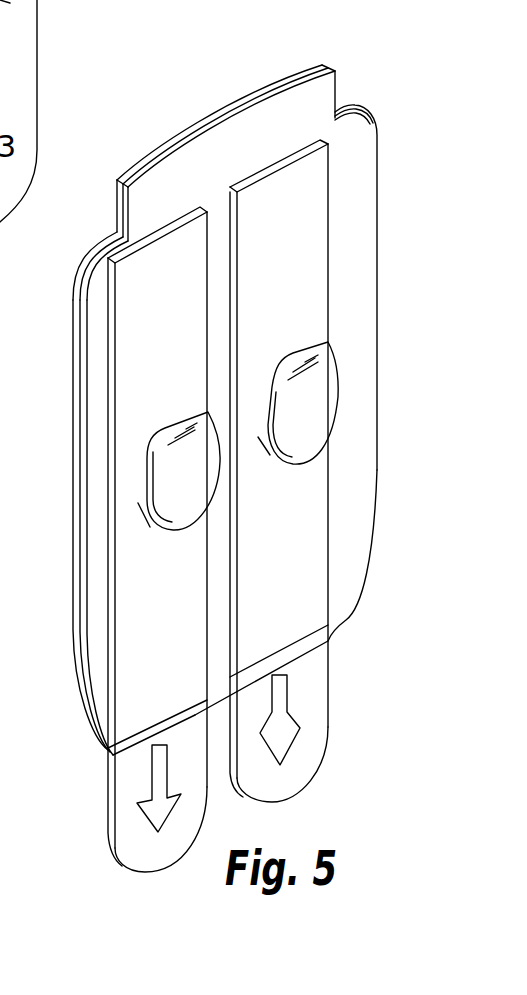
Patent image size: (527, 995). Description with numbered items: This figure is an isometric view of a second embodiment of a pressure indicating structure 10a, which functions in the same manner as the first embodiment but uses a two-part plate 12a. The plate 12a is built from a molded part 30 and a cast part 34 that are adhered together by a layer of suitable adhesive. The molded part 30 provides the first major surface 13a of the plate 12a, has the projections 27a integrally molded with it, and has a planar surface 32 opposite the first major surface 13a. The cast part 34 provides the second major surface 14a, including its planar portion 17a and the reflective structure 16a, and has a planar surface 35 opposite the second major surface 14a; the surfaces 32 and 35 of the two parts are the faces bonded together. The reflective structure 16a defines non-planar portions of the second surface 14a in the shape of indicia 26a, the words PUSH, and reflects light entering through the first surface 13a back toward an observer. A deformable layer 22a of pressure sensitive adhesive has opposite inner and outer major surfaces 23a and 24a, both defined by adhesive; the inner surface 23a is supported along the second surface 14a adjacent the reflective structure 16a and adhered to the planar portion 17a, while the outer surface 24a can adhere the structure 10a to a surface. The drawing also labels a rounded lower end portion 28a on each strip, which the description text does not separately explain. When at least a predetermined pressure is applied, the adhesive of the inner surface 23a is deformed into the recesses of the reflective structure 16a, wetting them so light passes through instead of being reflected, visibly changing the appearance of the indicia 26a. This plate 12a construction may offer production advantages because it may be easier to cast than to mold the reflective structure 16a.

The pressure indicating structure 10a is at (227, 442).
The plate 12a is at (259, 390).
The first major surface 13a is at (356, 207).
The second major surface 14a is at (73, 286).
The reflective structure 16a is at (190, 563).
The planar portion 17a is at (73, 331).
The deformable layer 22a is at (108, 444).
The inner major surface 23a is at (122, 689).
The outer major surface 24a is at (288, 195).
The indicia 26a is at (165, 263).
The projections 27a is at (315, 415).
The rounded pull end with arrow 28a is at (121, 797).
The molded part 30 is at (358, 262).
The planar surface 32 is at (117, 212).
The cast part 34 is at (95, 247).
The planar surface 35 is at (145, 173).